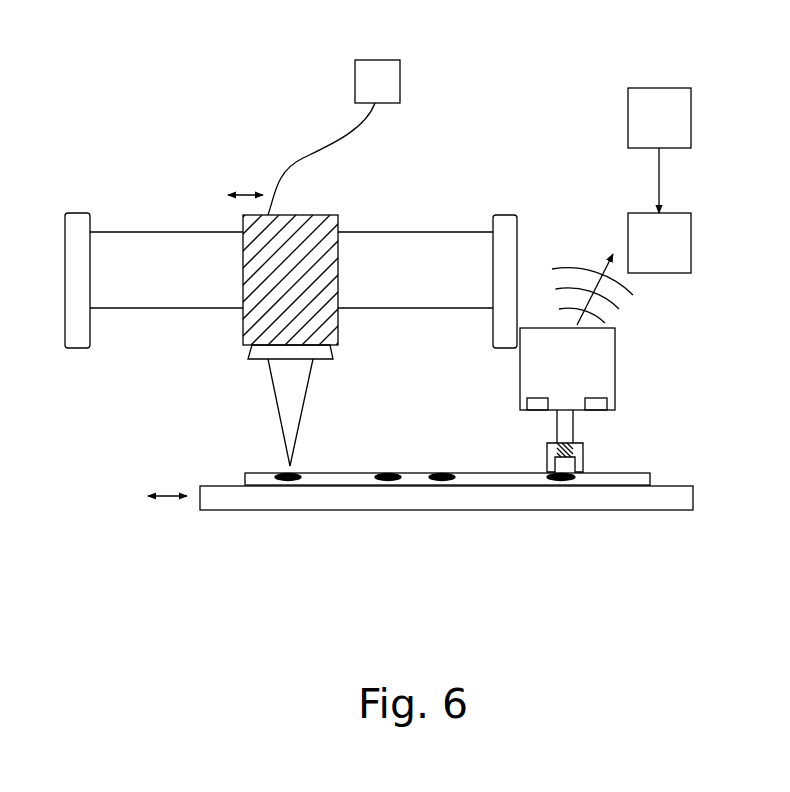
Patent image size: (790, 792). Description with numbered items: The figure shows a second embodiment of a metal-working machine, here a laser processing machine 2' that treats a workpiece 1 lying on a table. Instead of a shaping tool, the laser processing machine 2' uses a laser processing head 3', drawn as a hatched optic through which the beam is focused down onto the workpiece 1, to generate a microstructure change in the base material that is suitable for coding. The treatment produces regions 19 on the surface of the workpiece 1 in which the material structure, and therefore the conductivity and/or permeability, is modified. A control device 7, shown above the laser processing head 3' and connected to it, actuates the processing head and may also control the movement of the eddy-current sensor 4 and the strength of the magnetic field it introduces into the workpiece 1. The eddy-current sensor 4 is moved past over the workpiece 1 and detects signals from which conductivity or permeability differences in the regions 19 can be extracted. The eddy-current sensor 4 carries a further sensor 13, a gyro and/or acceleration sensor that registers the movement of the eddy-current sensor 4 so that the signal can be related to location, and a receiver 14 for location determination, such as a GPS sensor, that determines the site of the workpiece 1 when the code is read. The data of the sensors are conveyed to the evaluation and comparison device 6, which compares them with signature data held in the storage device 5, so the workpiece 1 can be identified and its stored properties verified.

The workpiece 1 is at (638, 473).
The laser processing machine 2' is at (281, 234).
The laser processing head 3' is at (290, 316).
The eddy-current sensor 4 is at (602, 434).
The storage device 5 is at (640, 118).
The evaluation and comparison device 6 is at (640, 232).
The control device 7 is at (378, 70).
The further sensor 13 is at (540, 398).
The receiver for location determination 14 is at (590, 398).
The regions of the mechanical surface treatment 19 is at (560, 486).